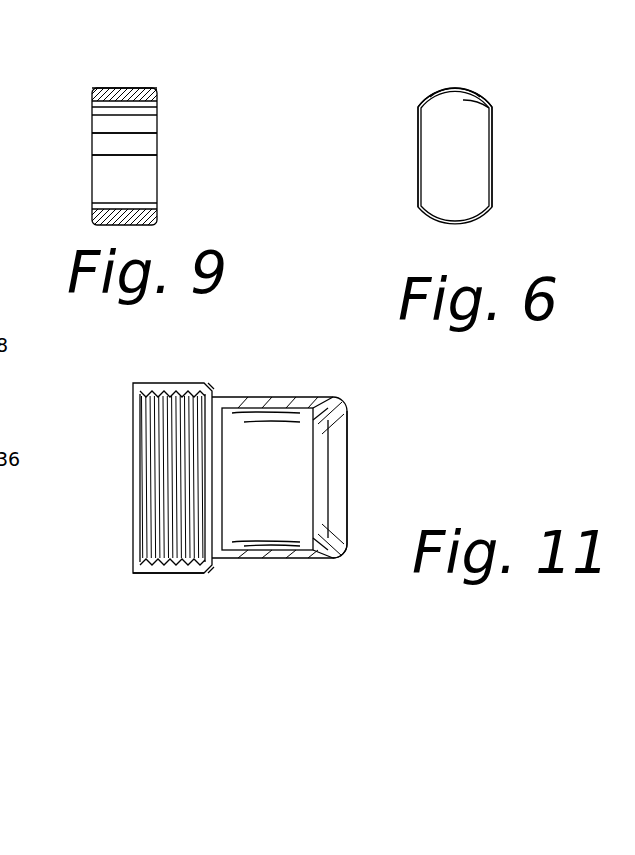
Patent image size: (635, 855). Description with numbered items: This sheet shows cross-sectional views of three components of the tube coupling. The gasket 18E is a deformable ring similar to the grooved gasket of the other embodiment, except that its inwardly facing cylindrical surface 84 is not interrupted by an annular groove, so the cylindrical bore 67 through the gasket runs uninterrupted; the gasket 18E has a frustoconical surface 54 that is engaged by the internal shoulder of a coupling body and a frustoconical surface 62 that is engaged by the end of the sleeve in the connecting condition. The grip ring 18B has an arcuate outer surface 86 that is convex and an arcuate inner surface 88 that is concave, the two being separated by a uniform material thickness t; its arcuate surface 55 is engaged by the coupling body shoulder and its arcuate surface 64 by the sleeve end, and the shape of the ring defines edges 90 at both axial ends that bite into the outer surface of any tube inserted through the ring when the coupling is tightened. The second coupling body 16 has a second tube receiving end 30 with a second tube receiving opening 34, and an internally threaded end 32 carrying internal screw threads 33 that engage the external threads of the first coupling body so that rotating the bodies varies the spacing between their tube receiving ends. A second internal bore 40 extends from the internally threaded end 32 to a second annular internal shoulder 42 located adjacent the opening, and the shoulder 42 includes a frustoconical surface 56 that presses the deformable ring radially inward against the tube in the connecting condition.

In FIG. 9, the gasket 18E is at (160, 74).
In FIG. 9, the frustoconical surface 54 is at (92, 88).
In FIG. 9, the frustoconical surface 62 is at (157, 89).
In FIG. 9, the cylindrical bore 67 is at (143, 148).
In FIG. 9, the inwardly facing cylindrical surface 84 is at (108, 205).
In FIG. 6, the grip ring 18B is at (470, 83).
In FIG. 6, the arcuate outer surface 86 is at (443, 88).
In FIG. 6, the arcuate surface 55 is at (440, 92).
In FIG. 6, the arcuate surface 64 is at (478, 93).
In FIG. 6, the arcuate inner surface 88 is at (464, 99).
In FIG. 6, the edges 90 is at (418, 135).
In FIG. 6, the material thickness t is at (452, 180).
In FIG. 11, the second coupling body 16 is at (360, 443).
In FIG. 11, the second internal bore 40 is at (160, 478).
In FIG. 11, the internal screw threads 33 is at (143, 535).
In FIG. 11, the internally threaded end 32 is at (150, 563).
In FIG. 11, the second annular internal shoulder 42 is at (316, 422).
In FIG. 11, the frustoconical surface 56 is at (315, 488).
In FIG. 11, the second tube receiving opening 34 is at (338, 497).
In FIG. 11, the second tube receiving end 30 is at (342, 548).